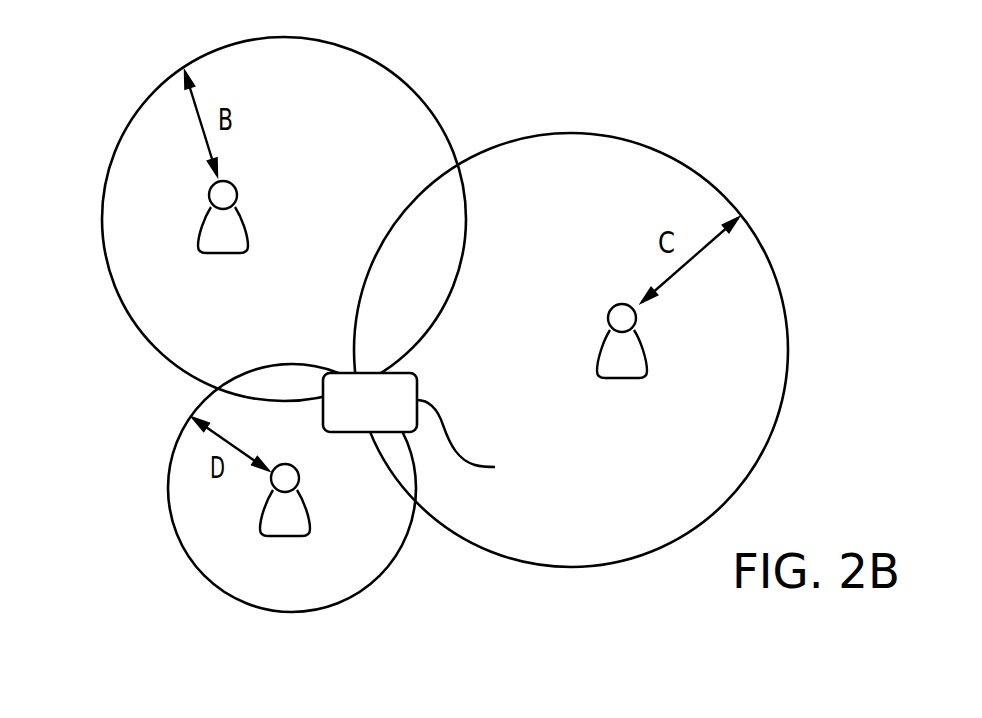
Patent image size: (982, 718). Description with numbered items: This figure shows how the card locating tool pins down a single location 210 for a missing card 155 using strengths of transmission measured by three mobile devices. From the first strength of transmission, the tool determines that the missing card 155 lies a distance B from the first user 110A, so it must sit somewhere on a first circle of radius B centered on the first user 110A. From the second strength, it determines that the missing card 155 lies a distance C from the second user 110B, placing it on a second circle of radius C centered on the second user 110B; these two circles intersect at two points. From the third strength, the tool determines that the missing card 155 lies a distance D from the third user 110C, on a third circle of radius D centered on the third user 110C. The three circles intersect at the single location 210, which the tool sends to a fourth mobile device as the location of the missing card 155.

The first user 110A is at (198, 225).
The second user 110B is at (645, 340).
The third user 110C is at (311, 510).
The location 210 is at (357, 387).
The missing card 155 is at (481, 442).